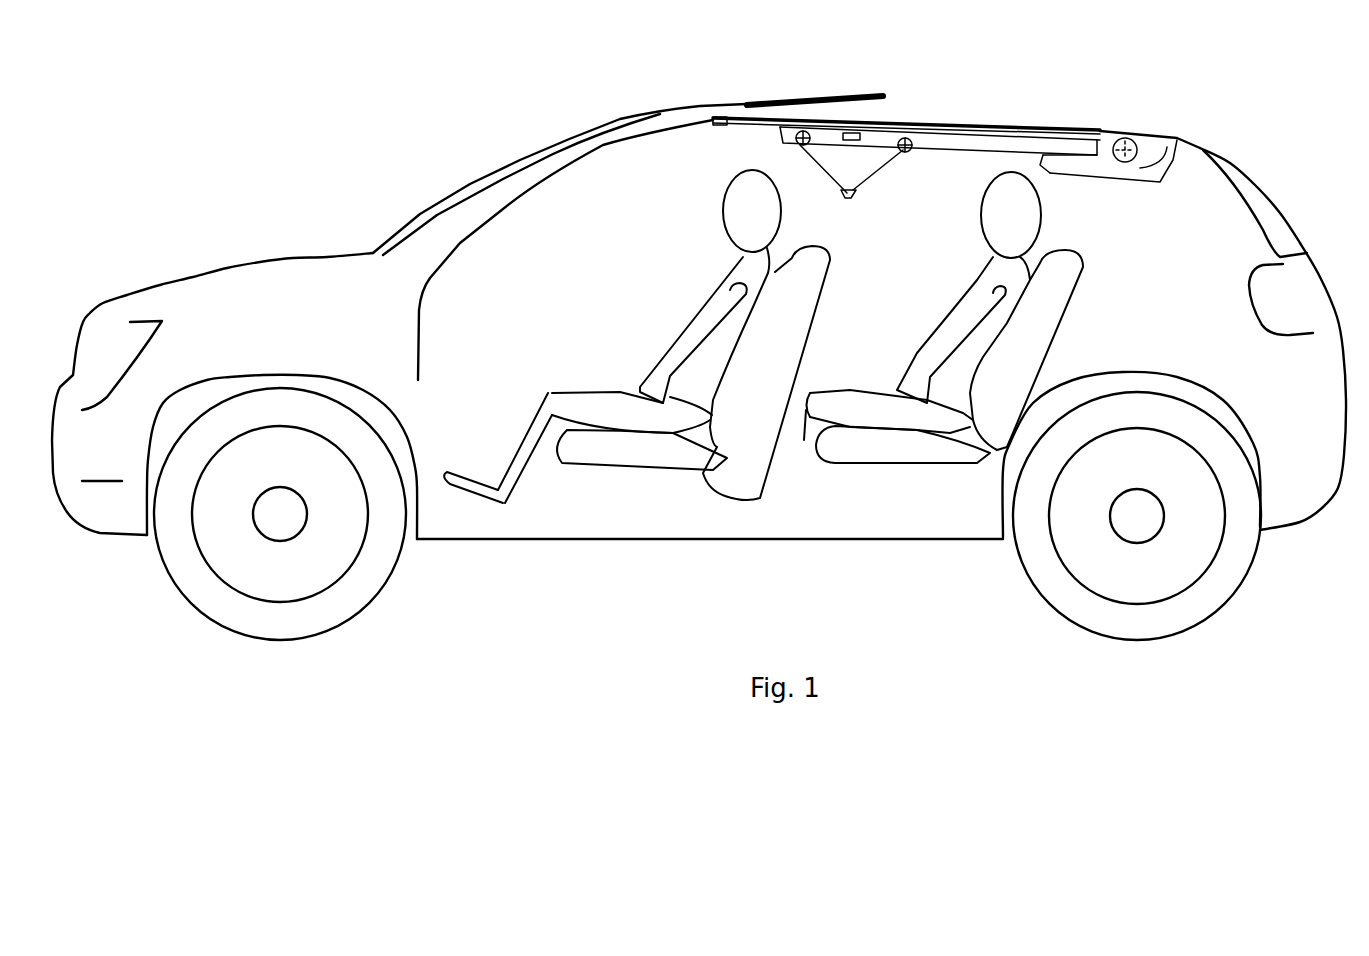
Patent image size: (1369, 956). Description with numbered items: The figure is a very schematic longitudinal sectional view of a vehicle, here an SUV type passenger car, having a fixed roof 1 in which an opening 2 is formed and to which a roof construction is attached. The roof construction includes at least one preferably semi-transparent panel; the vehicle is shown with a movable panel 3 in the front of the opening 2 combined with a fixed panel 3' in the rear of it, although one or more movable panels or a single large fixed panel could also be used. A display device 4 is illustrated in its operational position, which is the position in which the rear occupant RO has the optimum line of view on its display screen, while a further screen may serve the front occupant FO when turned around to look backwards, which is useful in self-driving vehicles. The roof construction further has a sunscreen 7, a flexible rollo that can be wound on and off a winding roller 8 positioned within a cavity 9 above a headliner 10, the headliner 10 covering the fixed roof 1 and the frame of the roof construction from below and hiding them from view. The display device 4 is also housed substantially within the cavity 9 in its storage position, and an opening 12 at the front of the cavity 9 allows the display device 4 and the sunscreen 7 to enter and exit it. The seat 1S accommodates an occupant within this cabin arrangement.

The fixed roof 1 is at (607, 130).
The vehicle seat 1S is at (812, 263).
The opening 2 is at (870, 110).
The movable panel 3 is at (803, 77).
The fixed panel 3' is at (906, 95).
The display device 4 is at (832, 124).
The sunscreen 7 is at (1097, 140).
The winding roller 8 is at (1133, 142).
The cavity 9 is at (1147, 162).
The headliner 10 is at (1203, 147).
The opening 12 is at (1040, 167).
The front occupant FO is at (738, 212).
The rear occupant RO is at (1008, 190).